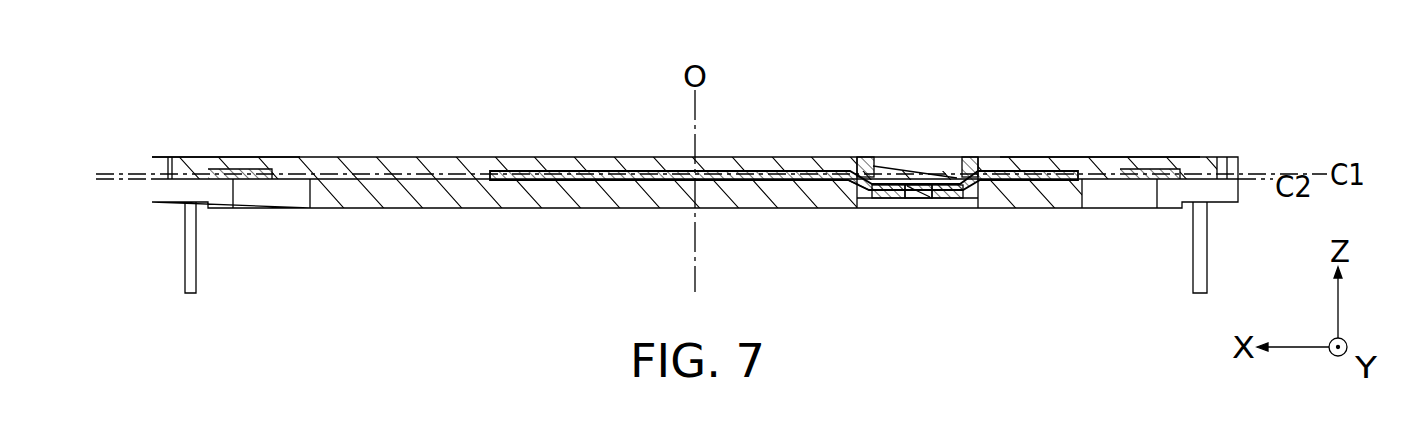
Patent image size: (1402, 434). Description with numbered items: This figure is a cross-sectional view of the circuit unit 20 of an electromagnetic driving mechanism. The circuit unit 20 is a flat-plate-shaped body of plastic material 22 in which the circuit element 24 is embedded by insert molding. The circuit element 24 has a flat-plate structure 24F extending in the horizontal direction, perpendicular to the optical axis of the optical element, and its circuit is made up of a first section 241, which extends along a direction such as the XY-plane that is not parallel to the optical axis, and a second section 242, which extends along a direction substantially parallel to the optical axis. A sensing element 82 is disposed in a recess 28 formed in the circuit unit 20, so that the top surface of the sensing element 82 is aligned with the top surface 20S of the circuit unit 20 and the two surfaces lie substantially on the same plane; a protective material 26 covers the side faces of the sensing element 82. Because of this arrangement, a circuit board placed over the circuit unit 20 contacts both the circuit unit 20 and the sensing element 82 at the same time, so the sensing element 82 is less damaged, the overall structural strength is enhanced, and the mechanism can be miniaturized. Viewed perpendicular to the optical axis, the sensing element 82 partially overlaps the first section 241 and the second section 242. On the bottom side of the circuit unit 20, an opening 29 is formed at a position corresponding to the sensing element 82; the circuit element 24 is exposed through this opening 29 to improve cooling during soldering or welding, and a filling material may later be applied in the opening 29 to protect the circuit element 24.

The circuit unit 20 is at (153, 96).
The top surface of the circuit unit 20S is at (1097, 157).
The plastic material 22 is at (371, 208).
The circuit element 24 is at (625, 180).
The flat-plate structure 24F is at (587, 168).
The first section 241 is at (773, 182).
The second section 242 is at (843, 186).
The protective material 26 is at (863, 163).
The recess 28 is at (973, 157).
The opening 29 is at (938, 208).
The sensing element 82 is at (915, 163).